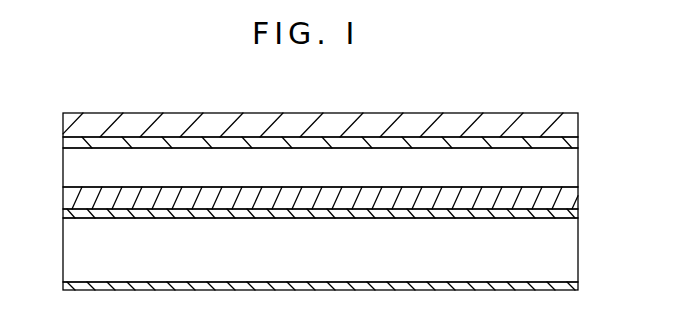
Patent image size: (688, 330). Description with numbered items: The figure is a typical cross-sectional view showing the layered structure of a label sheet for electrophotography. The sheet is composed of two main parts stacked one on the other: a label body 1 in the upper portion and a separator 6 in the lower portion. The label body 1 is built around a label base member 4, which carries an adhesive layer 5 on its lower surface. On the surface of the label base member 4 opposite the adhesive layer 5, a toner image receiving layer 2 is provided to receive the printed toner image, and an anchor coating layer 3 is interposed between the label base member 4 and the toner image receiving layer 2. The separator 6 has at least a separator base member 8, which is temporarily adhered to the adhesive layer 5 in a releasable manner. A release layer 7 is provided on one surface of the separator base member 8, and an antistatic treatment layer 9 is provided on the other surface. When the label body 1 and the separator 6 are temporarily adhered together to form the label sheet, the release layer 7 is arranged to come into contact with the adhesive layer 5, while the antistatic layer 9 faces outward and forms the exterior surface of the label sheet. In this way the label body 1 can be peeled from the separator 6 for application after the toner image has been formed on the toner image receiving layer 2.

The label body 1 is at (50, 113).
The toner image receiving layer 2 is at (573, 127).
The anchor coating layer 3 is at (573, 140).
The label base member 4 is at (573, 168).
The adhesive layer 5 is at (573, 200).
The separator 6 is at (50, 218).
The release layer 7 is at (563, 215).
The separator base member 8 is at (570, 258).
The antistatic treatment layer 9 is at (570, 287).